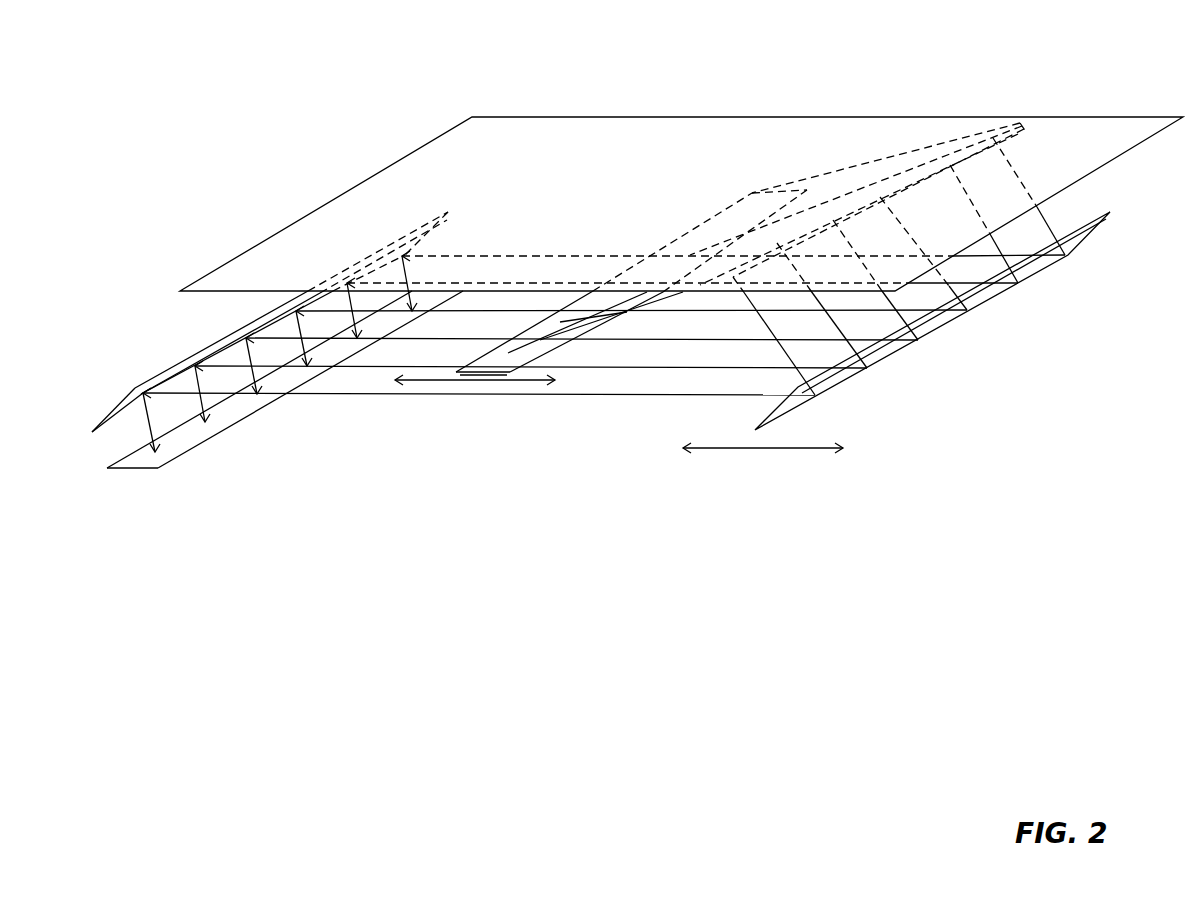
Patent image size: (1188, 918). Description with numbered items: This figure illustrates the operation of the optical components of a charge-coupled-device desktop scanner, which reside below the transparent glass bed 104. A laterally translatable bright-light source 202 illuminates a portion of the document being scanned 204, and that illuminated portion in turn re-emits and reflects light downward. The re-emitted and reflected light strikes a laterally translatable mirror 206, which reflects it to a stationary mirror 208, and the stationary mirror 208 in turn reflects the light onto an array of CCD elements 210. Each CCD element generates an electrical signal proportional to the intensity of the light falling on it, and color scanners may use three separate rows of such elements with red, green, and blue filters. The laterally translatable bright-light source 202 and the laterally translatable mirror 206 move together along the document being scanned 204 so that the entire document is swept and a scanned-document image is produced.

The transparent glass bed 104 is at (671, 130).
The laterally translatable bright-light source 202 is at (492, 360).
The document being scanned 204 is at (1004, 118).
The laterally translatable mirror 206 is at (1097, 233).
The stationary mirror 208 is at (107, 402).
The array of CCD elements 210 is at (178, 447).